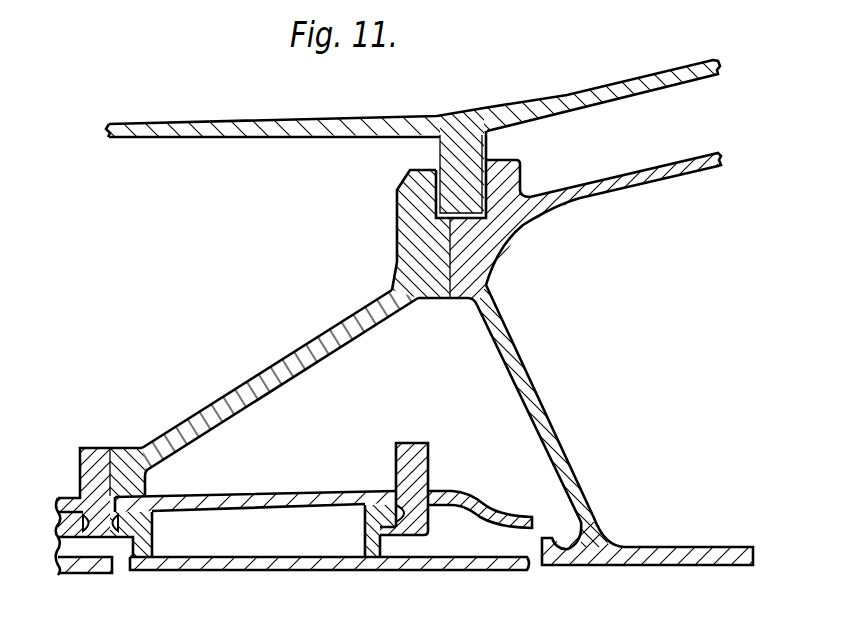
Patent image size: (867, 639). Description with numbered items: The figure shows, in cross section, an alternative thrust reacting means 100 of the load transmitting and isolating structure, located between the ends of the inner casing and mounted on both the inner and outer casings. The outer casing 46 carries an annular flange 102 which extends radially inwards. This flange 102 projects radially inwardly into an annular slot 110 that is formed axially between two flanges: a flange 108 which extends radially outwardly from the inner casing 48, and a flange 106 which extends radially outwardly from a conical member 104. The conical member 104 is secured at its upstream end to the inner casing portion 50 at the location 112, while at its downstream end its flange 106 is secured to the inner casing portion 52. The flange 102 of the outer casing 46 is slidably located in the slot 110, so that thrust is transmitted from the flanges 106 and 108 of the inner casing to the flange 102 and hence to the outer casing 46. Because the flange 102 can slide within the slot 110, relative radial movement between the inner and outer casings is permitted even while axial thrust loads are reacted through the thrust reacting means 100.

The outer casing 46 is at (678, 74).
The inner casing 48 is at (697, 170).
The inner casing portion 50 is at (296, 492).
The inner casing portion 52 is at (536, 388).
The thrust reacting means 100 is at (342, 266).
The annular flange 102 is at (448, 150).
The conical member 104 is at (340, 348).
The flange 106 is at (398, 226).
The flange 108 is at (513, 186).
The annular slot 110 is at (488, 185).
The securing location 112 is at (80, 460).